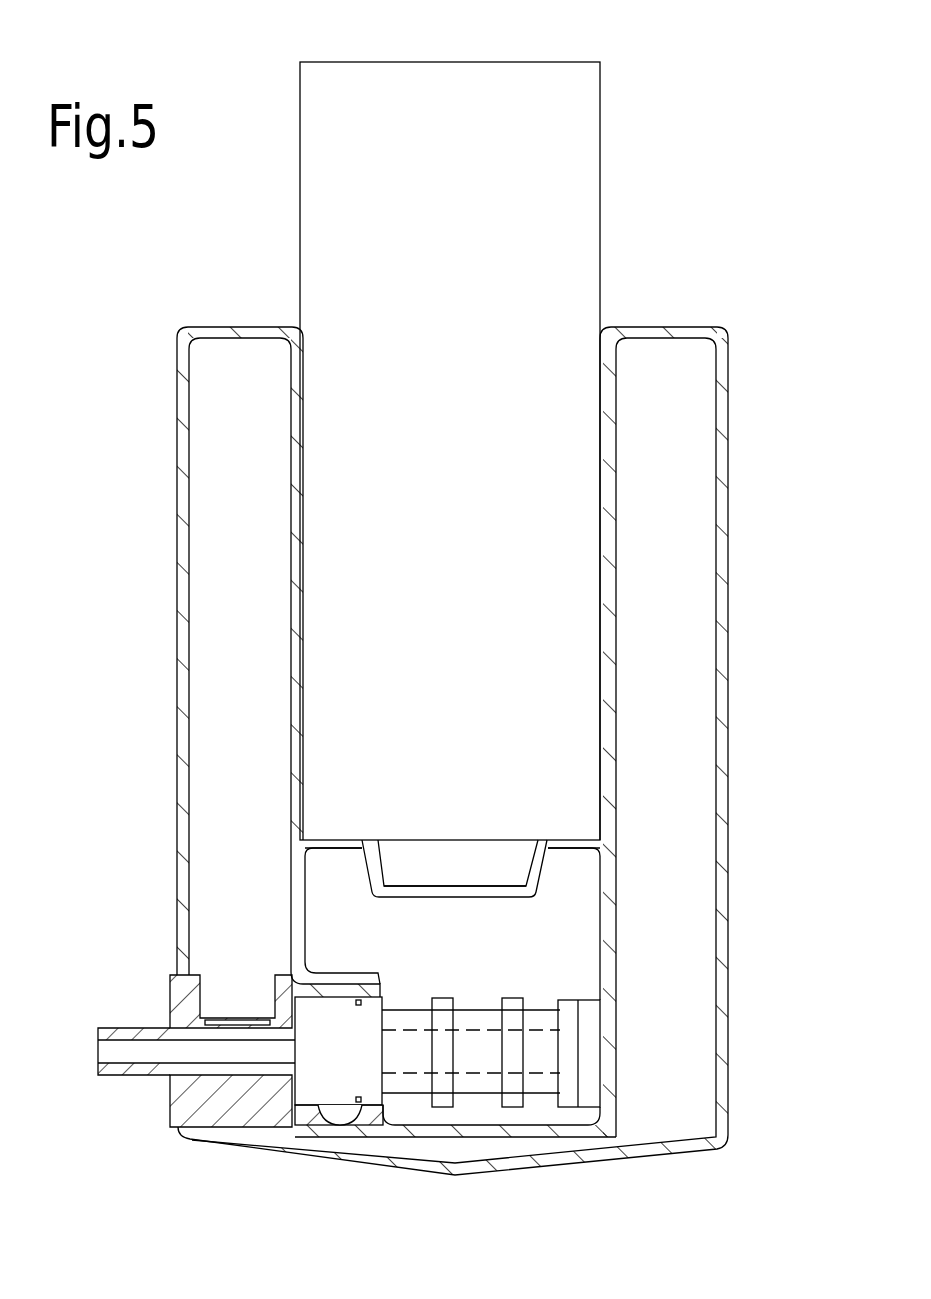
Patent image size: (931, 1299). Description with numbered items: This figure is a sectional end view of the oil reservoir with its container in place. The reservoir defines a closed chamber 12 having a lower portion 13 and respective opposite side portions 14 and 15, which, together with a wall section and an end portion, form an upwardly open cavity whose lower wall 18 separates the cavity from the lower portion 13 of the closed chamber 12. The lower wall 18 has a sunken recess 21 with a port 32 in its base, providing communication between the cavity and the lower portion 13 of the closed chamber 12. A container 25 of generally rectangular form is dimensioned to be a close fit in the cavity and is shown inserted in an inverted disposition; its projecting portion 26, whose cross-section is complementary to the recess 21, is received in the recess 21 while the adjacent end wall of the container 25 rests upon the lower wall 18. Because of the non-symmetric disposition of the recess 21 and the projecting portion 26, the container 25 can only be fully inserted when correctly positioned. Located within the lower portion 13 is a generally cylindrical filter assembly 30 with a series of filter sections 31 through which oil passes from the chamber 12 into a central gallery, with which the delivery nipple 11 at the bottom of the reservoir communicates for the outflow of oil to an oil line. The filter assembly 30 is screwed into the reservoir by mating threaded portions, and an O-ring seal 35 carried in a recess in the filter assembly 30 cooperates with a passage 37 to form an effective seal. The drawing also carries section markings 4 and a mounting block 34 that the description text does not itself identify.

The section line 4- 4 is at (450, 60).
The delivery nipple 11 is at (128, 1076).
The closed chamber 12 is at (736, 427).
The lower portion 13 is at (468, 963).
The side portion 14 is at (222, 693).
The side portion 15 is at (682, 708).
The lower wall 18 is at (328, 848).
The sunken recess 21 is at (545, 875).
The container 25 is at (683, 225).
The projecting portion 26 is at (426, 870).
The filter assembly 30 is at (562, 1065).
The filter sections 31 is at (488, 1072).
The port 32 is at (533, 1050).
The mounting block 34 is at (312, 1127).
The O-ring seal 35 is at (358, 1125).
The passage 37 is at (378, 1000).